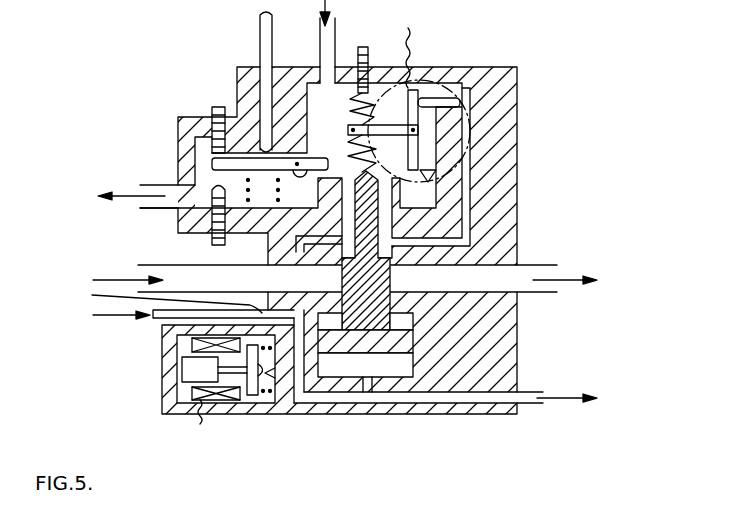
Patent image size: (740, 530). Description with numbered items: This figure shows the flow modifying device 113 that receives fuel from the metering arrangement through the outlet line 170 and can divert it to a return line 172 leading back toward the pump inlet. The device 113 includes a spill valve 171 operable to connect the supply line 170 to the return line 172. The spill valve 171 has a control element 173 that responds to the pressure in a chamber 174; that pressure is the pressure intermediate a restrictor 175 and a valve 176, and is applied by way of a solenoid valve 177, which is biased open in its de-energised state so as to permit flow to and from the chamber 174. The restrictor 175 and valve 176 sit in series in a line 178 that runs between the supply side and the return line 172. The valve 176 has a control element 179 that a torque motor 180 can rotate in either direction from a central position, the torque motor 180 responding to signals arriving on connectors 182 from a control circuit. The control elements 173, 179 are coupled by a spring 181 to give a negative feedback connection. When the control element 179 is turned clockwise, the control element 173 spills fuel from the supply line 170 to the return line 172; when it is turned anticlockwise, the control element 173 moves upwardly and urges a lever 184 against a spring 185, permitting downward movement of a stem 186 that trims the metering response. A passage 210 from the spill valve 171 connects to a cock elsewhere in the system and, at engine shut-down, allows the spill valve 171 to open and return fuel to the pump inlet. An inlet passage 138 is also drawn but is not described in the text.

The valve housing 113 is at (524, 180).
The inlet passage 138 is at (322, 45).
The main flow passage 170 is at (145, 278).
The valve seat 171 is at (397, 360).
The outlet passage 172 is at (122, 197).
The spool valve member 173 is at (368, 278).
The valve block 174 is at (348, 365).
The supply tube 175 is at (155, 297).
The connecting channel 176 is at (447, 172).
The solenoid armature plate 177 is at (260, 383).
The inlet pipe 178 is at (128, 316).
The pilot valve stem 179 is at (415, 138).
The pilot valve assembly 180 is at (440, 69).
The bias spring 181 is at (360, 132).
The actuating chain 182 is at (412, 44).
The diaphragm plate 184 is at (252, 163).
The bleed orifice 185 is at (278, 178).
The vent tube 186 is at (266, 33).
The return passage 210 is at (559, 400).